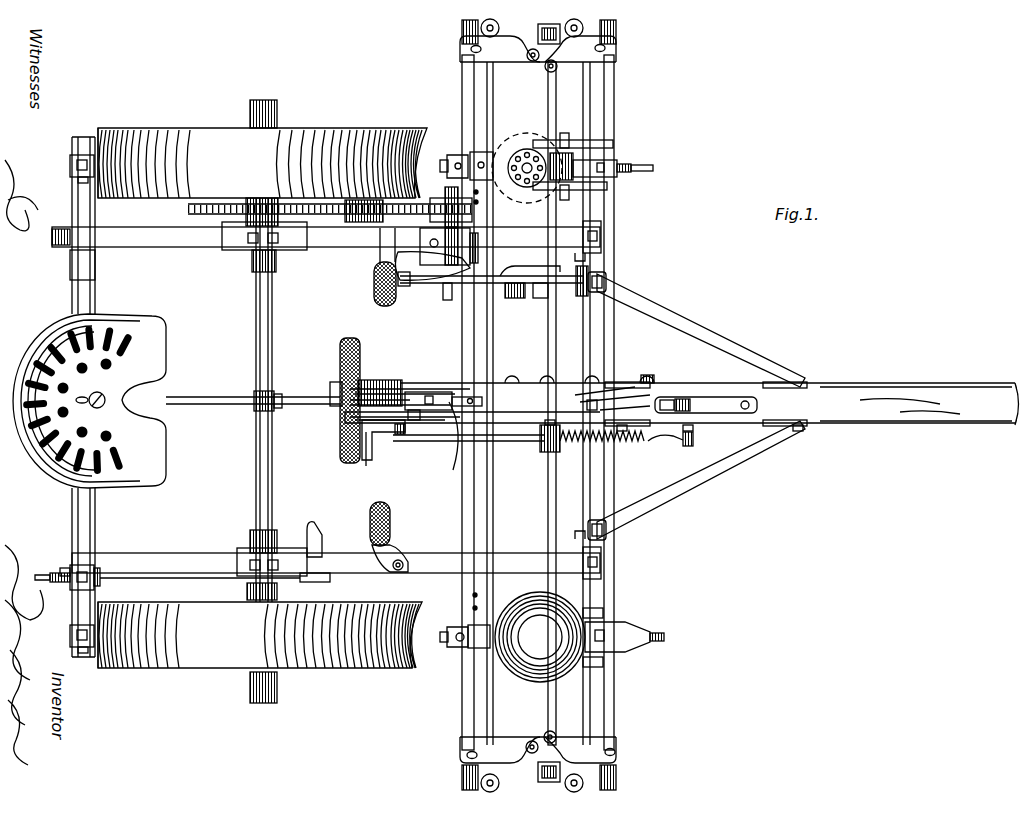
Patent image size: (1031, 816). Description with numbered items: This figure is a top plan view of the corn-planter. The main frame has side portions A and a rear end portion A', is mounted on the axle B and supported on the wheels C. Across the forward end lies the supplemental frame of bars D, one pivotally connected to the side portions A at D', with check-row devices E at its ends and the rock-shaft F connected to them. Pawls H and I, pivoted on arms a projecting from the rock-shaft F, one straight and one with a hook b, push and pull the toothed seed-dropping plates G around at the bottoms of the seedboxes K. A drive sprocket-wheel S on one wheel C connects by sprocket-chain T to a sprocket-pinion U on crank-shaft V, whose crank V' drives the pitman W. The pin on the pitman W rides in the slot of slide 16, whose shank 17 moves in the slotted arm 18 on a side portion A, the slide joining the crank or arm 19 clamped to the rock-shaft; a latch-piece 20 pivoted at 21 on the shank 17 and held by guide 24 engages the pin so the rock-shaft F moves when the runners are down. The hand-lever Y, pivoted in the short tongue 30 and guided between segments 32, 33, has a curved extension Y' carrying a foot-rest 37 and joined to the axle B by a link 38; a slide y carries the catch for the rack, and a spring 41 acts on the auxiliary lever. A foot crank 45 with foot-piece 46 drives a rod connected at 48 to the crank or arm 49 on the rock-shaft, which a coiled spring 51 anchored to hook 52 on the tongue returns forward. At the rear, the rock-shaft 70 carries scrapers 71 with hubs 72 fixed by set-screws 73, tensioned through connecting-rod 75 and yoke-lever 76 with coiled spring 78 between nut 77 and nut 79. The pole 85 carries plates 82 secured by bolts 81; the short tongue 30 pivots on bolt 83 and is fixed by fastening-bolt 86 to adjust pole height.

The scraper or blade 71 is at (106, 152).
The hub 72 is at (70, 164).
The set-screw 73 is at (80, 176).
The rock-shaft 70 is at (86, 270).
The rear end portion of the main frame A' is at (65, 397).
The side portions of the main frame A is at (326, 402).
The wheels C is at (262, 398).
The drive sprocket-wheel S is at (187, 207).
The sprocket-chain T is at (326, 208).
The sprocket-pinion U is at (449, 204).
The crank-shaft V is at (456, 246).
The crank V' is at (432, 266).
The pitman or connecting-rod W is at (481, 274).
The slide 16 is at (526, 283).
The arm 18 is at (403, 284).
The shank or stem 17 is at (440, 279).
The pivot 21 is at (453, 298).
The guide 24 is at (533, 291).
The latch-piece 20 is at (540, 303).
The crank or arm 19 is at (580, 291).
The bars of the supplemental frame D is at (537, 402).
The pivotal connection D' is at (606, 400).
The check-row devices E is at (550, 405).
The rock-shaft F is at (547, 503).
The seed-dropping plates or disks G is at (520, 150).
The hook b is at (548, 153).
The arms a is at (562, 136).
The pawl H is at (606, 142).
The additional pawl I is at (610, 191).
The seedboxes K is at (552, 637).
The axle or shaft B is at (269, 348).
The curved extension Y' is at (253, 388).
The clamp or link 38 is at (274, 407).
The foot-rest 37 is at (341, 452).
The segment 33 is at (380, 388).
The slide y is at (406, 392).
The hand-lever Y is at (462, 384).
The crank 45 is at (392, 434).
The foot-piece 46 is at (364, 462).
The segment 32 is at (416, 414).
The spring 41 is at (455, 408).
The movable connection 48 is at (500, 443).
The crank or arm 49 is at (570, 448).
The coiled spring 51 is at (602, 451).
The hook or catch 52 is at (672, 444).
The short tongue 30 is at (556, 403).
The fastening-bolt 86 is at (520, 377).
The pivotal bolt 83 is at (582, 377).
The bolts 81 is at (634, 377).
The plate 82 is at (674, 378).
The pole or tongue 85 is at (837, 394).
The yoke-lever 76 is at (327, 533).
The coiled spring 78 is at (63, 570).
The nut 79 is at (100, 570).
The nut 77 is at (50, 583).
The connecting-rod 75 is at (172, 579).